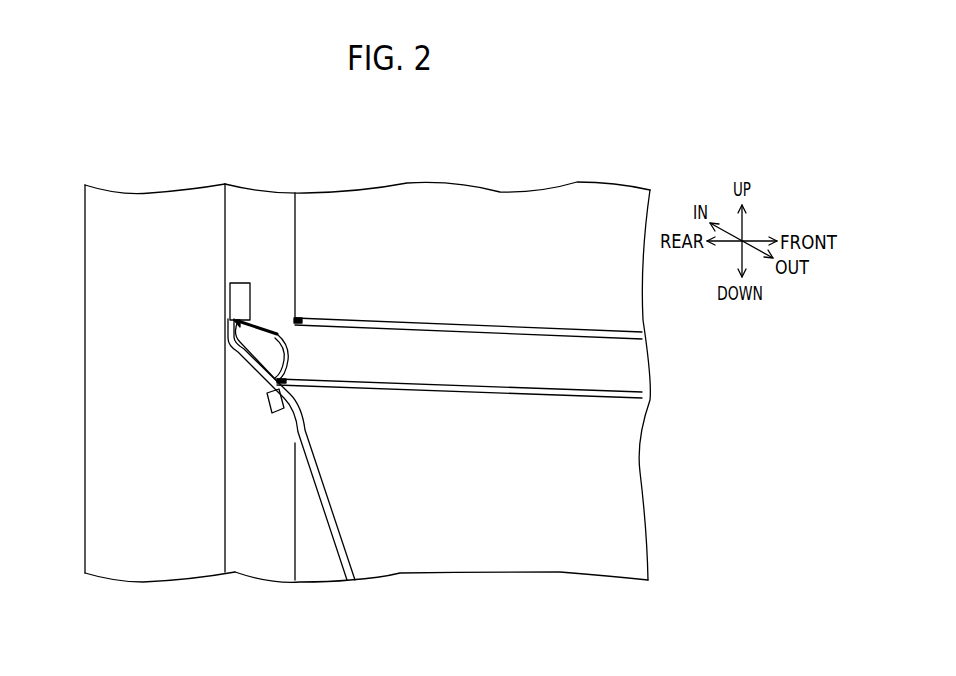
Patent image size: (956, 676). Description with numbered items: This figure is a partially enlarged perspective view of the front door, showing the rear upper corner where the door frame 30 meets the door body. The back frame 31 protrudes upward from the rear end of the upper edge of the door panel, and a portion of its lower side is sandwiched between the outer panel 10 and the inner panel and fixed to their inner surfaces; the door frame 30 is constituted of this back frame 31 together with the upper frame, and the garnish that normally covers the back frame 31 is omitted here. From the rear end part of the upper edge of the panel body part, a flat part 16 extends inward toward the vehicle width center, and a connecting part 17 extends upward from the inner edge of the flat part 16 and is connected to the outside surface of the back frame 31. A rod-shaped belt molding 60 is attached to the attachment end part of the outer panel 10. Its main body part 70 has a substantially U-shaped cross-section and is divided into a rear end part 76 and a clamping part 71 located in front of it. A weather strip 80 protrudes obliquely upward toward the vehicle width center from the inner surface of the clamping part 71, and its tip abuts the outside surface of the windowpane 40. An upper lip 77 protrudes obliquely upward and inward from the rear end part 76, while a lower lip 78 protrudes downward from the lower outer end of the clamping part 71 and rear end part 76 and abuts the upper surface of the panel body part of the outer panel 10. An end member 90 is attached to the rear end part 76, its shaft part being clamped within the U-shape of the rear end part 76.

The outer panel 10 is at (640, 475).
The flat part 16 is at (240, 358).
The connecting part 17 is at (245, 283).
The door frame 30 is at (85, 279).
The back frame 31 is at (85, 316).
The windowpane 40 is at (557, 211).
The belt molding 60 is at (573, 300).
The main body part 70 is at (405, 327).
The clamping part 71 is at (512, 390).
The rear end part 76 is at (293, 386).
The upper lip 77 is at (233, 319).
The lower lip 78 is at (577, 397).
The weather strip 80 is at (467, 323).
The end member 90 is at (270, 331).